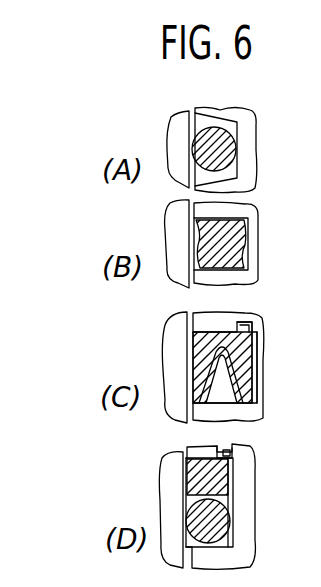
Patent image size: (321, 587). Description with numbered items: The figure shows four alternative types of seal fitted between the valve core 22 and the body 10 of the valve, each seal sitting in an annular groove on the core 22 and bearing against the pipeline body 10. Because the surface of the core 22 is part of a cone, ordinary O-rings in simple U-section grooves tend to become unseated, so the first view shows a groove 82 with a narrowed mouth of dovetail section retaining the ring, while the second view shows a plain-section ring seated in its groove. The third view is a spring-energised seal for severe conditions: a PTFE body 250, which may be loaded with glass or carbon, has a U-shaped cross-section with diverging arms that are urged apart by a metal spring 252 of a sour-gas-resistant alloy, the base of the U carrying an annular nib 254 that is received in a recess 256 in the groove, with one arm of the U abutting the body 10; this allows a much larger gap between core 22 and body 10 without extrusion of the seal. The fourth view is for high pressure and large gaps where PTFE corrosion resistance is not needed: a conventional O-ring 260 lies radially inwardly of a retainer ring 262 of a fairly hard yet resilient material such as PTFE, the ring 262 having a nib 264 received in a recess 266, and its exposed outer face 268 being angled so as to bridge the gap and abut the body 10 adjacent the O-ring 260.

In FIG. 6A, the body 10 is at (185, 114).
In FIG. 6A, the valve core 22 is at (215, 112).
In FIG. 6A, the grooves 82 is at (235, 130).
In FIG. 6C, the PTFE body 250 is at (240, 350).
In FIG. 6C, the metal spring 252 is at (235, 380).
In FIG. 6C, the annular nib 254 is at (258, 325).
In FIG. 6C, the recess 256 is at (255, 319).
In FIG. 6D, the O-ring 260 is at (205, 516).
In FIG. 6D, the retainer ring 262 is at (213, 482).
In FIG. 6D, the nib 264 is at (235, 453).
In FIG. 6D, the recess 266 is at (230, 452).
In FIG. 6D, the exposed outer face 268 is at (193, 466).